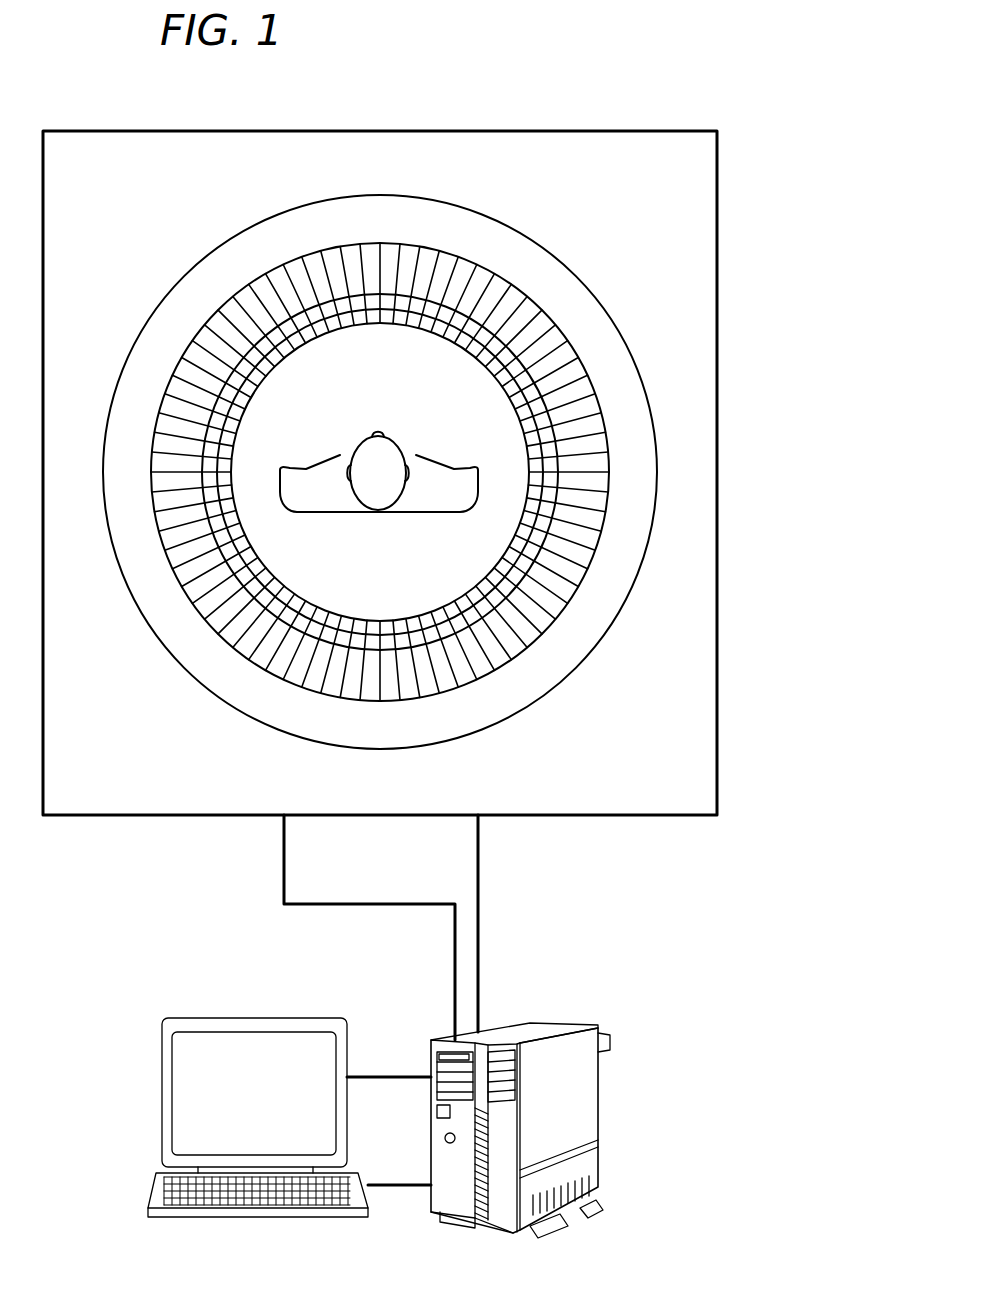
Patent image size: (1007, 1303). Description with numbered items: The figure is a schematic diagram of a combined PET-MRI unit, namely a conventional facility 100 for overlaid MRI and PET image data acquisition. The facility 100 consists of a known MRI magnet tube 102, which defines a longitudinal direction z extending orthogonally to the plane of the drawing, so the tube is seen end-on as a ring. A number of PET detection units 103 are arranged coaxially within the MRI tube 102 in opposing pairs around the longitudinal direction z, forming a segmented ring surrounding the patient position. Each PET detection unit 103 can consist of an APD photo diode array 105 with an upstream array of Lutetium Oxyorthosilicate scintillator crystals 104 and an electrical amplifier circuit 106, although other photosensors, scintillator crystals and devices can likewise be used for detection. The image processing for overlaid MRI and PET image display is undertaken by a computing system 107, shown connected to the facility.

The facility 100 is at (368, 131).
The MRI magnet tube 102 is at (588, 290).
The PET detection units 103 is at (358, 620).
The array of LSO scintillator crystals 104 is at (540, 452).
The APD photo diode array 105 is at (386, 302).
The electrical amplifier circuit 106 is at (247, 313).
The computing system 107 is at (553, 1023).